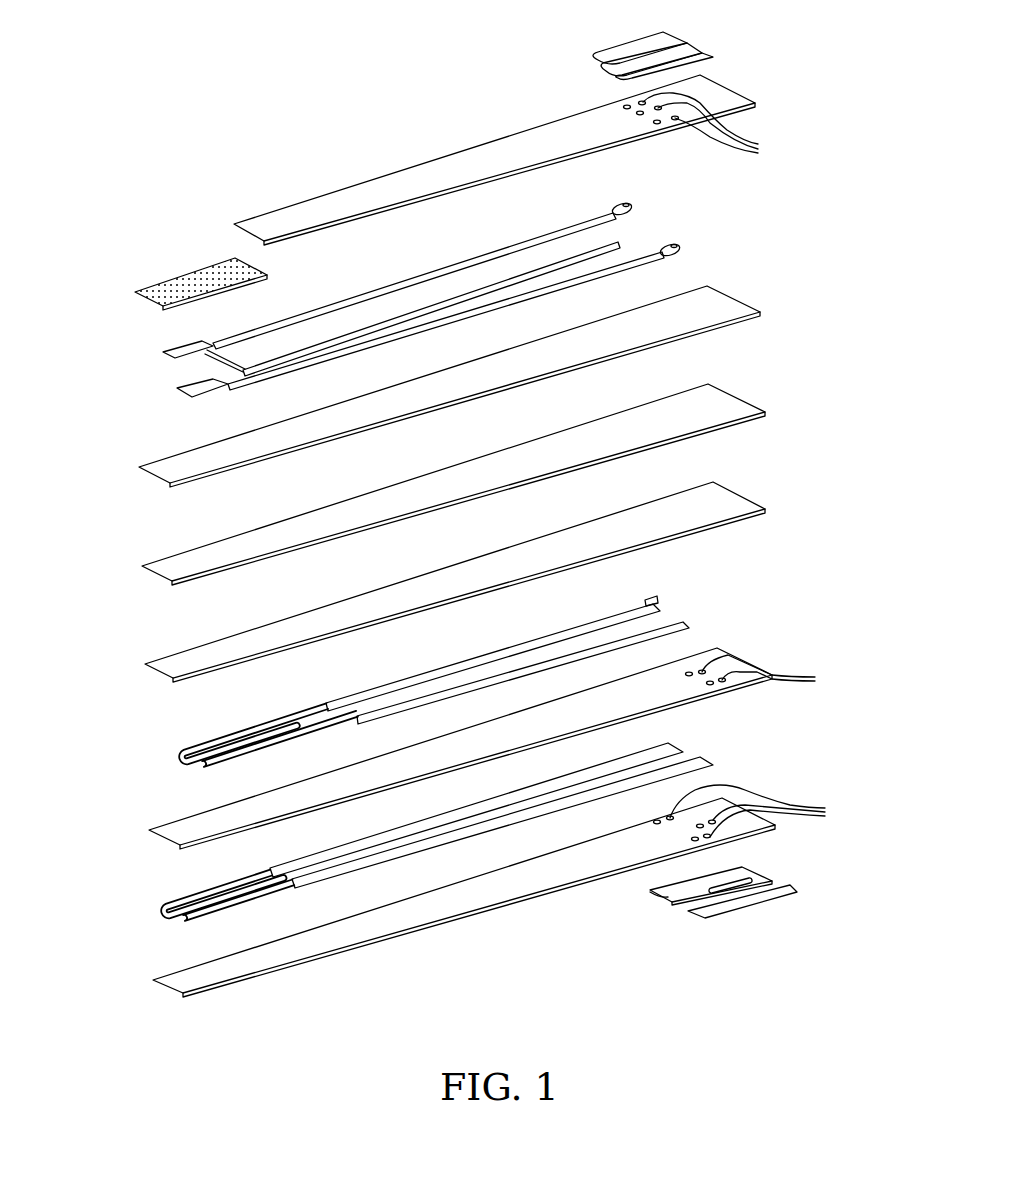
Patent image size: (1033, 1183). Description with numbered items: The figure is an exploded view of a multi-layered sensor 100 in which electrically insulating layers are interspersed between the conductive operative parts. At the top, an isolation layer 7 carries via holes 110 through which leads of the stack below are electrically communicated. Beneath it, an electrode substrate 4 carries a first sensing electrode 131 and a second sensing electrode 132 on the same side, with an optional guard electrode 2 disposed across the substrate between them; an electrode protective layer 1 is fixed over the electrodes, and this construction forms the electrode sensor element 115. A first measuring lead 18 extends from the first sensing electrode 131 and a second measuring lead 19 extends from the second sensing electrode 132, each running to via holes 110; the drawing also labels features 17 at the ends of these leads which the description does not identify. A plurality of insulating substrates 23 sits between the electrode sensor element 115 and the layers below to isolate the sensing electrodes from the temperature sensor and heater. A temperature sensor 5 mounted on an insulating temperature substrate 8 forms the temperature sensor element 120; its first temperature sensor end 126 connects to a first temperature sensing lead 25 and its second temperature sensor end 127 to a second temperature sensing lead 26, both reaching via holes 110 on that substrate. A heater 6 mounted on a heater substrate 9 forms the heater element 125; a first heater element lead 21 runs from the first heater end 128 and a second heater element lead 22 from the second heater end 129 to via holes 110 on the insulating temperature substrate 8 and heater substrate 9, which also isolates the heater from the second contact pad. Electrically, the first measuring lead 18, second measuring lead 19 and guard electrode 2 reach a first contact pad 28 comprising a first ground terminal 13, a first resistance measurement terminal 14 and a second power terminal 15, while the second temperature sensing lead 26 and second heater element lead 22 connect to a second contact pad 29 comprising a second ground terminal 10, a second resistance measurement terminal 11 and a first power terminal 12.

The sensor 100 is at (200, 118).
The electrode protective layer 1 is at (190, 282).
The guard electrode 2 is at (423, 292).
The electrode substrate 4 is at (727, 300).
The temperature sensor 5 is at (230, 758).
The heater 6 is at (187, 913).
The isolation layer 7 is at (352, 197).
The insulating temperature substrate 8 is at (662, 678).
The heater substrate 9 is at (378, 922).
The second ground terminal 10 is at (652, 890).
The second resistance measurement terminal 11 is at (760, 883).
The first power terminal 12 is at (713, 910).
The first ground terminal 13 is at (655, 40).
The first resistance measurement terminal 14 is at (637, 58).
The second power terminal 15 is at (602, 62).
The contact pads 17 is at (673, 248).
The first measuring lead 18 is at (510, 250).
The second measuring lead 19 is at (605, 277).
The first heater element lead 21 is at (663, 755).
The second heater element lead 22 is at (692, 768).
The insulating substrates 23 is at (730, 400).
The first temperature sensing lead 25 is at (652, 610).
The second temperature sensing lead 26 is at (688, 622).
The first contact pad 28 is at (665, 15).
The second contact pad 29 is at (785, 856).
The via holes 110 is at (756, 465).
The electrode sensor element 115 is at (222, 223).
The temperature sensor element 120 is at (165, 738).
The heater element 125 is at (173, 889).
The first temperature sensor end 126 is at (183, 748).
The second temperature sensor end 127 is at (200, 765).
The first heater end 128 is at (185, 892).
The second heater end 129 is at (198, 920).
The first sensing electrode 131 is at (187, 352).
The second sensing electrode 132 is at (190, 389).